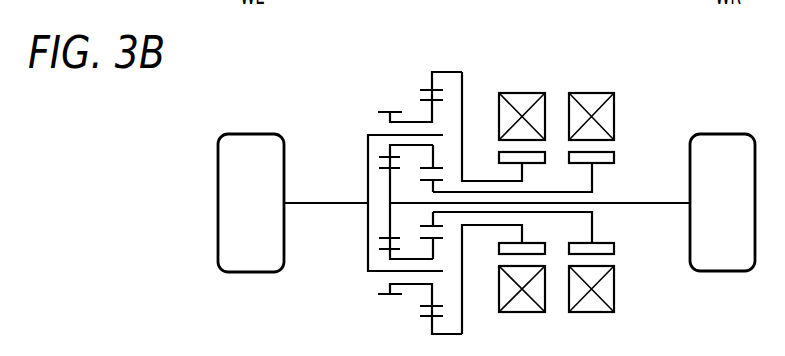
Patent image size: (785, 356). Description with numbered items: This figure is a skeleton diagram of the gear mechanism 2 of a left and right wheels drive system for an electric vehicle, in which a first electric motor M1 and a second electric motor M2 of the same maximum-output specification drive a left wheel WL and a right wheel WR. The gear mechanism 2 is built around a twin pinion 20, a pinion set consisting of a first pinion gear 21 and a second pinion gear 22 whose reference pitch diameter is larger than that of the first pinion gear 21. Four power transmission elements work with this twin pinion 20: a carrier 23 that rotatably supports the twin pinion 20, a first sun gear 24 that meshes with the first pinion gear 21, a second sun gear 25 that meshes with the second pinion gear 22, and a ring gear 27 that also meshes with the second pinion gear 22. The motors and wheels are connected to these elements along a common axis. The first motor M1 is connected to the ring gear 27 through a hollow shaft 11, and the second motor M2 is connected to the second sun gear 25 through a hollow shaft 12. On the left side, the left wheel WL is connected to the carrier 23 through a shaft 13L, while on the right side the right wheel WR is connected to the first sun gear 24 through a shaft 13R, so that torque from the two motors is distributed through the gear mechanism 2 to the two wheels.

The gear mechanism 2 is at (383, 65).
The hollow shaft 11 is at (483, 178).
The hollow shaft 12 is at (548, 212).
The shaft 13L is at (298, 207).
The shaft 13R is at (651, 200).
The twin pinion 20 is at (362, 123).
The first pinion gear 21 is at (380, 114).
The second pinion gear 22 is at (427, 115).
The carrier 23 is at (368, 161).
The first sun gear 24 is at (389, 188).
The second sun gear 25 is at (433, 192).
The ring gear 27 is at (431, 80).
The first electric motor M1 is at (522, 187).
The second electric motor M2 is at (591, 187).
The left wheel WL is at (250, 273).
The right wheel WR is at (725, 272).